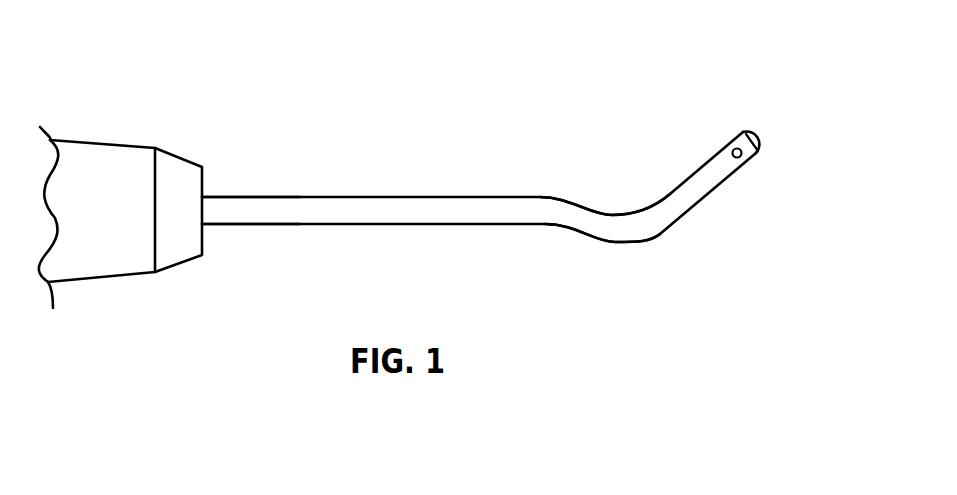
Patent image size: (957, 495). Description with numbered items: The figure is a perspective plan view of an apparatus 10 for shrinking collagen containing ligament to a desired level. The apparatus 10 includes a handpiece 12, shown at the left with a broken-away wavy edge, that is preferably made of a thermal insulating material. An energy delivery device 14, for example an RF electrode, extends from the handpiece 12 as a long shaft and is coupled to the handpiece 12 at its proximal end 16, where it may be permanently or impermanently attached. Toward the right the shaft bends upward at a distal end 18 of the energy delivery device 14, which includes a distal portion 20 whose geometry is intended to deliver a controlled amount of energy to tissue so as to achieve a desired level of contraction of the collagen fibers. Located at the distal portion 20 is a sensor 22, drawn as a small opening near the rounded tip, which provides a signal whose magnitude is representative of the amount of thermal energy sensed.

The apparatus for shrinking collagen containing ligament 10 is at (542, 115).
The handpiece 12 is at (137, 147).
The energy delivery device 14 is at (410, 208).
The proximal end 16 is at (225, 193).
The distal end 18 is at (668, 210).
The distal portion 20 is at (749, 130).
The sensor 22 is at (737, 158).